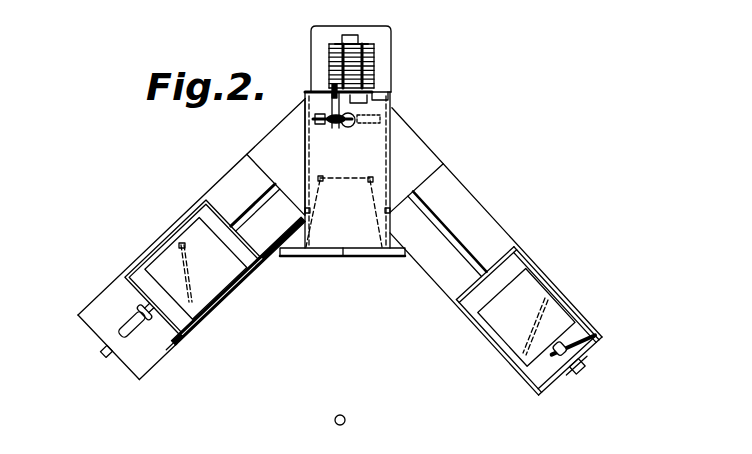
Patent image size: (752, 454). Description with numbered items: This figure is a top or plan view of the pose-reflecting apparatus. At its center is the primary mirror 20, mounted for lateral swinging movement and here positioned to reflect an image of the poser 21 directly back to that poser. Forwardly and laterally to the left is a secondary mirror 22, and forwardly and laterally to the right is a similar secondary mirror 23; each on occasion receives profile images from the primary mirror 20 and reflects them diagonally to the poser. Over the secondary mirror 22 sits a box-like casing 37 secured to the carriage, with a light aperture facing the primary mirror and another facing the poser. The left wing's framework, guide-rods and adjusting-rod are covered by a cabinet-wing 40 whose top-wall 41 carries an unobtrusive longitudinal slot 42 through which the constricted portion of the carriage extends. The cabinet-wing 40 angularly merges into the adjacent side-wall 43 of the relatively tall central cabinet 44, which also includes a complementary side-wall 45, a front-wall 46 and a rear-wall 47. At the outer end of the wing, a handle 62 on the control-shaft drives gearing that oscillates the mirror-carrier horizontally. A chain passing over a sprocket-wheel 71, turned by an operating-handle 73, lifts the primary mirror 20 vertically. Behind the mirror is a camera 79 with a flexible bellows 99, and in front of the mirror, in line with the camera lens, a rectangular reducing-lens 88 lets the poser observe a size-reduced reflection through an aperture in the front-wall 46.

The primary mirror 20 is at (370, 113).
The poser 21 is at (345, 418).
The secondary mirror 22 is at (182, 260).
The secondary mirror 23 is at (545, 318).
The box-like casing 37 is at (215, 283).
The cabinet-wing 40 is at (173, 347).
The top-wall 41 is at (103, 307).
The longitudinal slot 42 is at (240, 216).
The side-wall 43 is at (303, 132).
The central cabinet 44 is at (367, 147).
The side-wall 45 is at (392, 158).
The front-wall 46 is at (347, 258).
The rear-wall 47 is at (315, 91).
The handle 62 is at (102, 357).
The sprocket-wheel 71 is at (312, 125).
The operating-handle 73 is at (328, 75).
The camera 79 is at (371, 46).
The reducing-lens 88 is at (357, 167).
The flexible bellows 99 is at (375, 60).